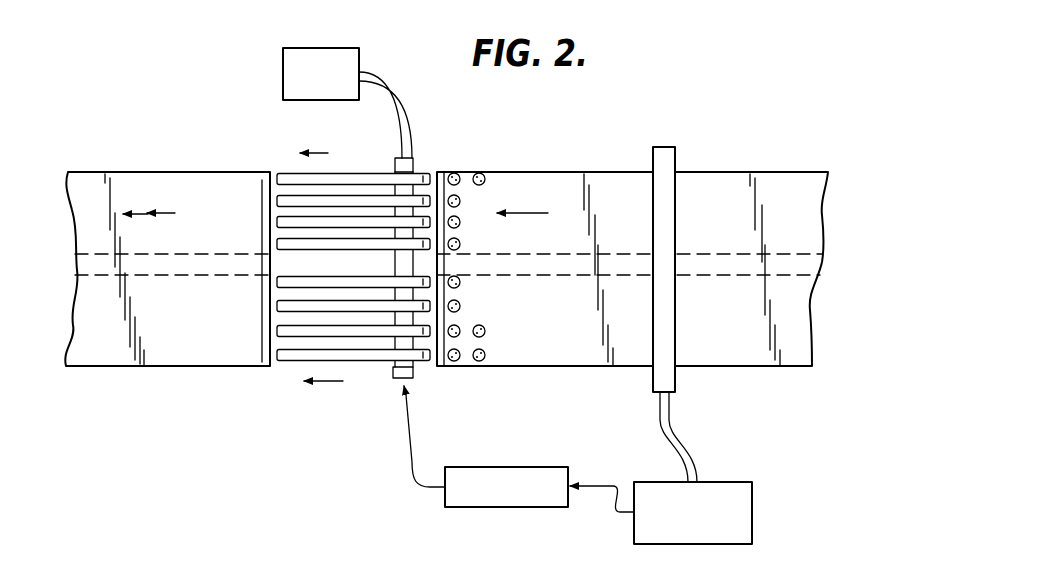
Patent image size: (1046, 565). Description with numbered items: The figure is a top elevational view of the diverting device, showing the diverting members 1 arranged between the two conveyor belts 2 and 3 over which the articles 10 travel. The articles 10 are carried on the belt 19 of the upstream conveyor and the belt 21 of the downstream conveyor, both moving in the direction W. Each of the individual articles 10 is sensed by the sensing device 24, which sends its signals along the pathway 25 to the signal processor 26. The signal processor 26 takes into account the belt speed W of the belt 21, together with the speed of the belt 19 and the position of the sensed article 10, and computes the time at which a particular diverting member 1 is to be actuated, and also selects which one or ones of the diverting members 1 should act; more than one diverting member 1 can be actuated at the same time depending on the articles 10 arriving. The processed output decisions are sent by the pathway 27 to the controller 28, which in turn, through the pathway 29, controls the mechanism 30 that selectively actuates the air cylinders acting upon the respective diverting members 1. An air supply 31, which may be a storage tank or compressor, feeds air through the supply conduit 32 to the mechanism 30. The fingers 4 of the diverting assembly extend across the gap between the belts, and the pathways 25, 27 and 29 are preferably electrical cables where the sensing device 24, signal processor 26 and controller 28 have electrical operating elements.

The diverting member 1 is at (356, 165).
The conveyor belt 2 is at (203, 148).
The conveyor belt 3 is at (547, 160).
The air nozzle fingers 4 is at (290, 197).
The article 10 is at (480, 171).
The belt 19 is at (158, 186).
The belt 21 is at (760, 355).
The sensing device 24 is at (678, 157).
The pathway 25 is at (672, 430).
The signal processor 26 is at (753, 506).
The pathway 27 is at (609, 498).
The controller 28 is at (530, 507).
The pathway 29 is at (414, 446).
The mechanism 30 is at (413, 157).
The air supply 31 is at (315, 46).
The air supply conduit 32 is at (393, 89).